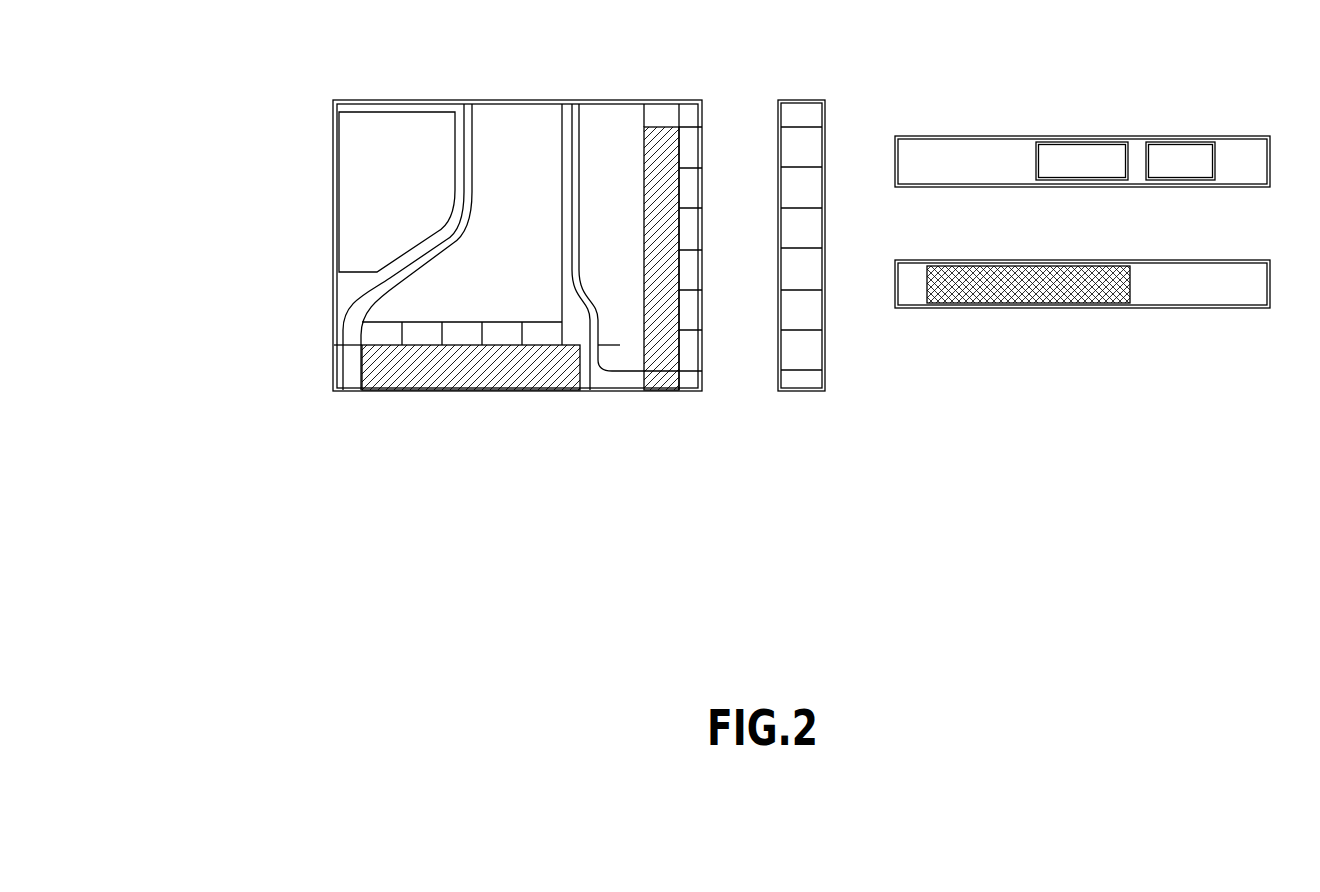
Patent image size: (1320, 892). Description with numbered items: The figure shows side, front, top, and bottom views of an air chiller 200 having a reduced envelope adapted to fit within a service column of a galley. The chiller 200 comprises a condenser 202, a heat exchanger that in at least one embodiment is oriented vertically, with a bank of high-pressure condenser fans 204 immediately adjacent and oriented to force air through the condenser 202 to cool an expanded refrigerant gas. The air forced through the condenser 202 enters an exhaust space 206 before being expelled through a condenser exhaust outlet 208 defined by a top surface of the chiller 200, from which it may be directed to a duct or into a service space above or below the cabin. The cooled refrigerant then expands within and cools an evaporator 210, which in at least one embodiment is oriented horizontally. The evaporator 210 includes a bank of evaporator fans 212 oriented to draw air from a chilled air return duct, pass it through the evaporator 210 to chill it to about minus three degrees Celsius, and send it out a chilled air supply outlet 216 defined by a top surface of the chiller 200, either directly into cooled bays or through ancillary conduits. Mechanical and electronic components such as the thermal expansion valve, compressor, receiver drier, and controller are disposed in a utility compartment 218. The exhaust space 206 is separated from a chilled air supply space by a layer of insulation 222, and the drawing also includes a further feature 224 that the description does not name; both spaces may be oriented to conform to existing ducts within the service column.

The air chiller 200 is at (298, 28).
The condenser 202 is at (665, 130).
The condenser fans 204 is at (690, 140).
The exhaust space 206 is at (612, 118).
The condenser exhaust outlet 208 is at (1180, 157).
The evaporator 210 is at (390, 384).
The evaporator fans 212 is at (423, 338).
The chilled air supply outlet 216 is at (1082, 157).
The utility compartment 218 is at (343, 184).
The layer of insulation 222 is at (568, 114).
The fluid passage 224 is at (491, 122).